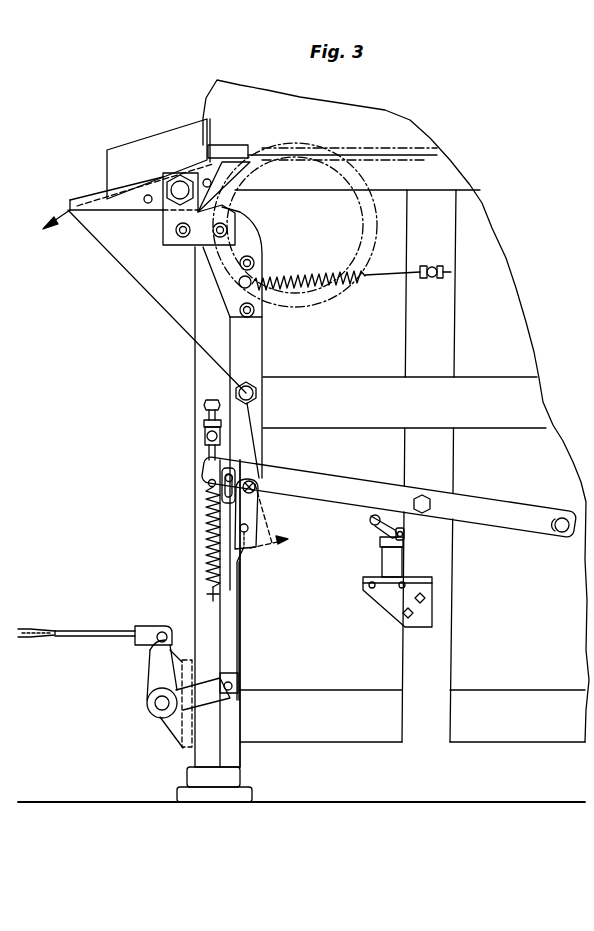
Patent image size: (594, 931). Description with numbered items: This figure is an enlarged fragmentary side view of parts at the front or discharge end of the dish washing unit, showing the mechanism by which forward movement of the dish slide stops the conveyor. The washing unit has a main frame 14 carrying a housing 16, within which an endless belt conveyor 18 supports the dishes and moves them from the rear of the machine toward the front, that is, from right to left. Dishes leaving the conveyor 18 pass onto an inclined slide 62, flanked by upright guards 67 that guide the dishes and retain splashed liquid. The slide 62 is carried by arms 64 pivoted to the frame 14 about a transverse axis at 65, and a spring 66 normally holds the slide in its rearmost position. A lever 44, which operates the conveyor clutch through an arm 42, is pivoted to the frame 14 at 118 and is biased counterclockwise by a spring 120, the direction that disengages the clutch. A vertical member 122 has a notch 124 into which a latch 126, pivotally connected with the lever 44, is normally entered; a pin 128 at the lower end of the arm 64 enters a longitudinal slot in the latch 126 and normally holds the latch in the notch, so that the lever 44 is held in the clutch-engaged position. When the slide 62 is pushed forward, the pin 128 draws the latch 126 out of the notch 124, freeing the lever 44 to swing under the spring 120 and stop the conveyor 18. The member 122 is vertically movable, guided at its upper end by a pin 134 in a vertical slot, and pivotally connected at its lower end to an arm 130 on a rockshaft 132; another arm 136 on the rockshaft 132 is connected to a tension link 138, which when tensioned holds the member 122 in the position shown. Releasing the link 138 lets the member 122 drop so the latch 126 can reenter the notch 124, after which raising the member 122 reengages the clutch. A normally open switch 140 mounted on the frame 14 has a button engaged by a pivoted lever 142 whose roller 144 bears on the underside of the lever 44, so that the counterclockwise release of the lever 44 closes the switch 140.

The main frame 14 is at (200, 391).
The housing 16 is at (218, 96).
The endless belt conveyor 18 is at (343, 148).
The arm 42 is at (559, 533).
The lever 44 is at (508, 514).
The slide 62 is at (92, 200).
The arms 64 is at (252, 350).
The transverse axis 65 is at (256, 393).
The spring 66 is at (338, 284).
The upright guards 67 is at (146, 152).
The pivot 118 is at (422, 494).
The spring 120 is at (208, 528).
The vertical member 122 is at (228, 603).
The notch 124 is at (242, 560).
The latch 126 is at (248, 512).
The pin 128 is at (272, 535).
The arm 130 is at (205, 695).
The rockshaft 132 is at (160, 712).
The pin 134 is at (246, 479).
The arm 136 is at (160, 669).
The tension link 138 is at (108, 623).
The switch 140 is at (384, 560).
The pivoted lever 142 is at (389, 529).
The roller 144 is at (380, 528).